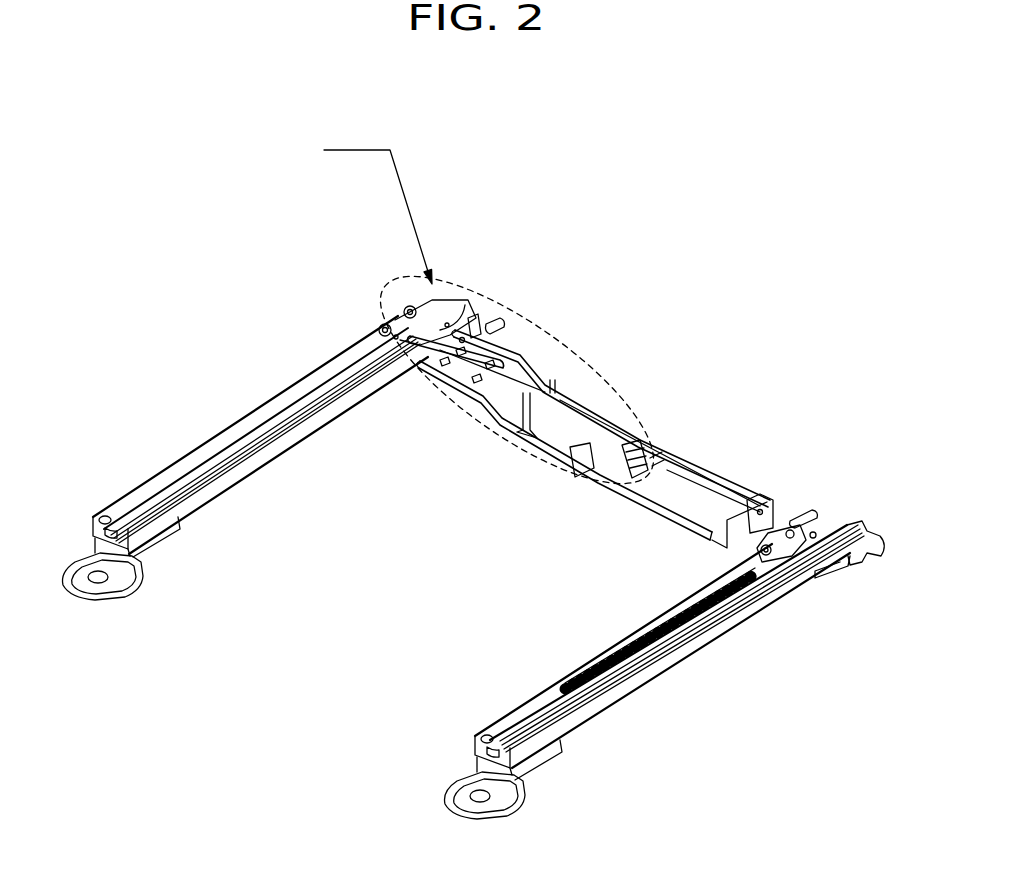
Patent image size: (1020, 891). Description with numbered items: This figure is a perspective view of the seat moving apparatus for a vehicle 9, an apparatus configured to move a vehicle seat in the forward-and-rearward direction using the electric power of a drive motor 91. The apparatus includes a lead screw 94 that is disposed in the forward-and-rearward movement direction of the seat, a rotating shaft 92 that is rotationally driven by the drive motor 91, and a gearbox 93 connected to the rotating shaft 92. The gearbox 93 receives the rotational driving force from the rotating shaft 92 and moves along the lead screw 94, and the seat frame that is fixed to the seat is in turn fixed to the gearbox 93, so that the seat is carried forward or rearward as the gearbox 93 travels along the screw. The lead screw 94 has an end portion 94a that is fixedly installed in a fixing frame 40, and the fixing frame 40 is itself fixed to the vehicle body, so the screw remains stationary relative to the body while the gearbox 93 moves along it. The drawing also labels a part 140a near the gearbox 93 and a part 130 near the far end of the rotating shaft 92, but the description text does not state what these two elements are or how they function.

The seat moving apparatus for a vehicle 9 is at (143, 189).
The lead screw 94 is at (232, 445).
The end portion 94a is at (105, 510).
The fixing frame 40 is at (230, 477).
The gearbox 93 is at (392, 305).
The pivot shaft 140a is at (472, 303).
The rotating shaft 92 is at (517, 348).
The drive motor 91 is at (578, 413).
The mounting bracket 130 is at (778, 495).